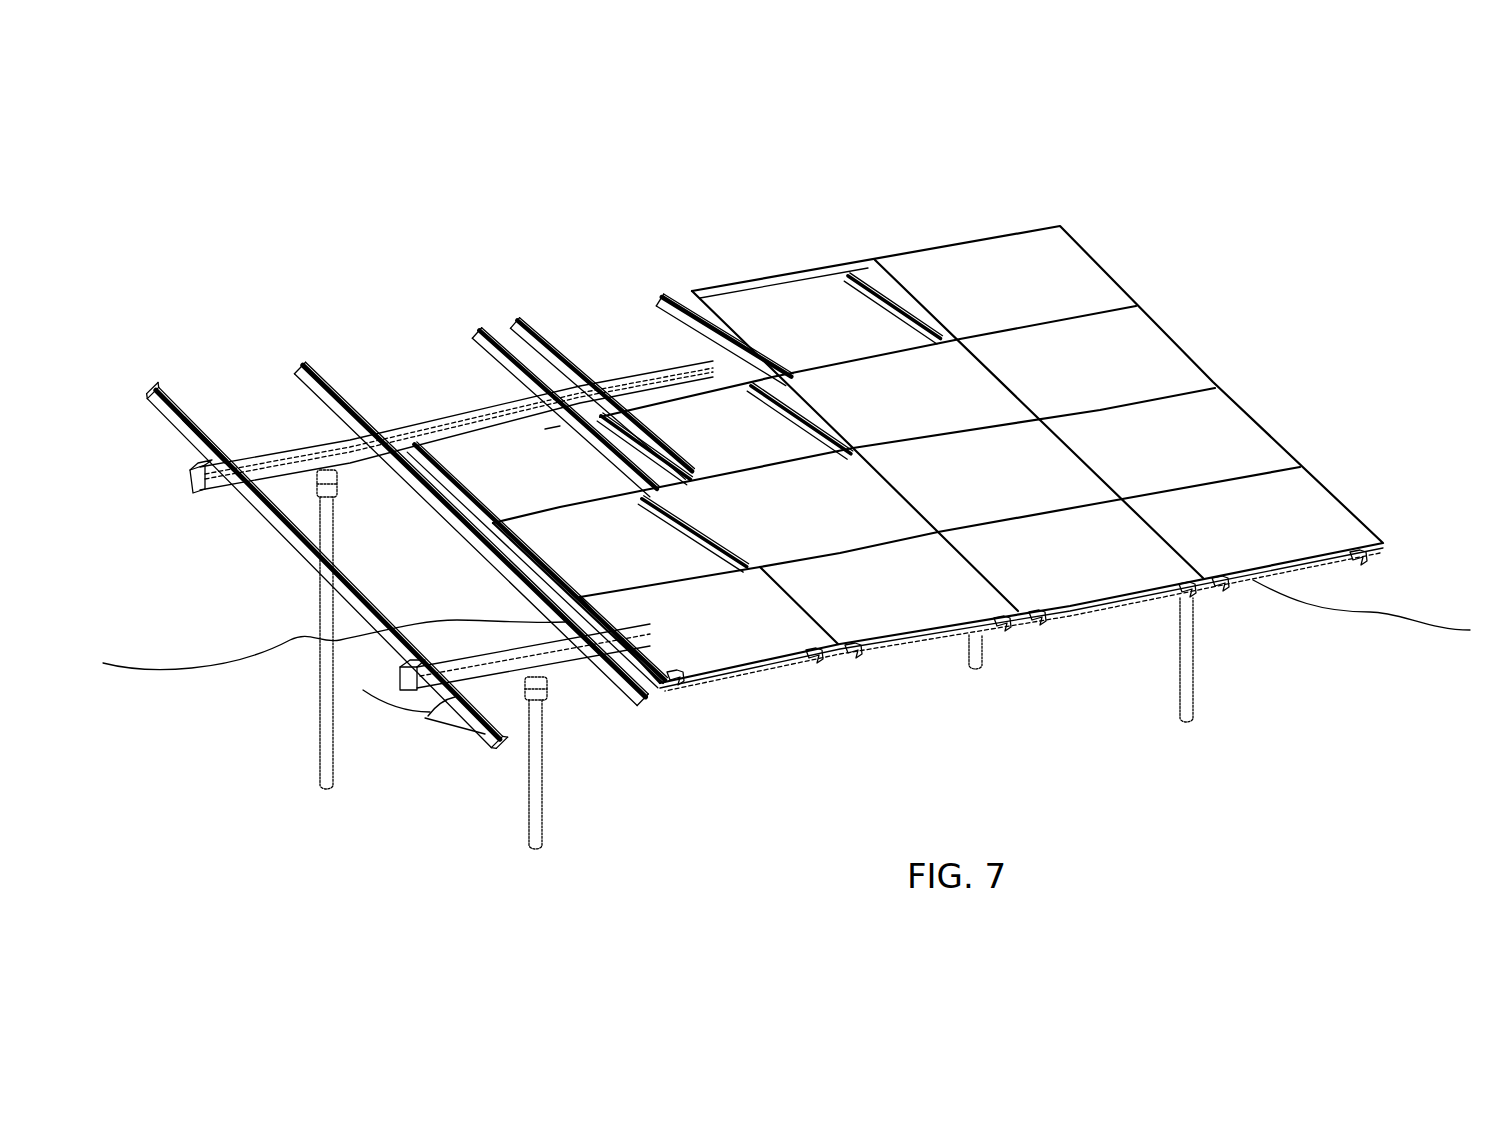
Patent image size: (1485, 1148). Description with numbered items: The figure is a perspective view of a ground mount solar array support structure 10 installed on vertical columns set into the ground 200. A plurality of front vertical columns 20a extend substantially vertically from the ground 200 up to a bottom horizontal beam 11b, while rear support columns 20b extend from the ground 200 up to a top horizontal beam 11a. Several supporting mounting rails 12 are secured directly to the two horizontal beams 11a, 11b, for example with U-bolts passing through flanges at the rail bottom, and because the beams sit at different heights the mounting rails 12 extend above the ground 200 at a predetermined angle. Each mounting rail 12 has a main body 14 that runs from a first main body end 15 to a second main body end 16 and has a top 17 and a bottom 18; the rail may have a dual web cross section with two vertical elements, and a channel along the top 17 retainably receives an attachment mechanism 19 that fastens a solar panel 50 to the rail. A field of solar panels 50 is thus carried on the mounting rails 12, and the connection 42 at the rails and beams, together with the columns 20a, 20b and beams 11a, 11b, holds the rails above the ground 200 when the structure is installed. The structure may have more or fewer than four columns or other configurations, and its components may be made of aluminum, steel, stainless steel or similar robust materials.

The solar array support structure 10 is at (418, 270).
The top horizontal beam 11a is at (463, 420).
The bottom horizontal beam 11b is at (493, 653).
The mounting rail 12 is at (153, 393).
The main body 14 is at (300, 540).
The first main body end 15 is at (153, 397).
The second main body end 16 is at (495, 735).
The top 17 is at (203, 433).
The bottom 18 is at (237, 500).
The attachment mechanism 19 is at (683, 683).
The front vertical column 20a is at (537, 805).
The rear support column 20b is at (323, 742).
The rail-to-beam connector 42 is at (557, 433).
The solar panel 50 is at (1017, 268).
The ground 200 is at (1397, 647).